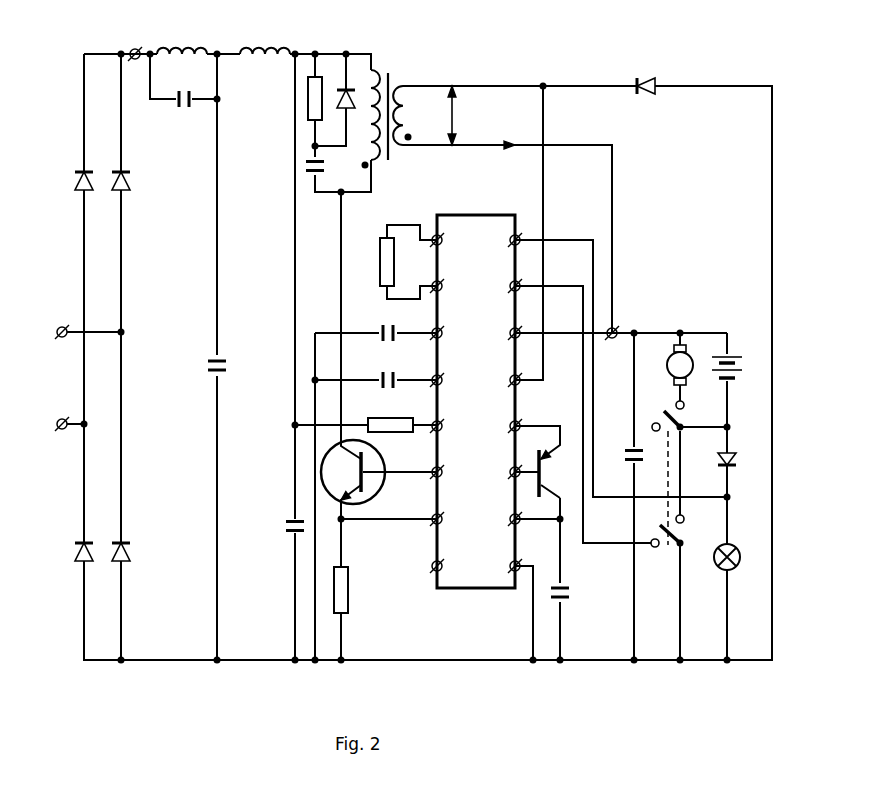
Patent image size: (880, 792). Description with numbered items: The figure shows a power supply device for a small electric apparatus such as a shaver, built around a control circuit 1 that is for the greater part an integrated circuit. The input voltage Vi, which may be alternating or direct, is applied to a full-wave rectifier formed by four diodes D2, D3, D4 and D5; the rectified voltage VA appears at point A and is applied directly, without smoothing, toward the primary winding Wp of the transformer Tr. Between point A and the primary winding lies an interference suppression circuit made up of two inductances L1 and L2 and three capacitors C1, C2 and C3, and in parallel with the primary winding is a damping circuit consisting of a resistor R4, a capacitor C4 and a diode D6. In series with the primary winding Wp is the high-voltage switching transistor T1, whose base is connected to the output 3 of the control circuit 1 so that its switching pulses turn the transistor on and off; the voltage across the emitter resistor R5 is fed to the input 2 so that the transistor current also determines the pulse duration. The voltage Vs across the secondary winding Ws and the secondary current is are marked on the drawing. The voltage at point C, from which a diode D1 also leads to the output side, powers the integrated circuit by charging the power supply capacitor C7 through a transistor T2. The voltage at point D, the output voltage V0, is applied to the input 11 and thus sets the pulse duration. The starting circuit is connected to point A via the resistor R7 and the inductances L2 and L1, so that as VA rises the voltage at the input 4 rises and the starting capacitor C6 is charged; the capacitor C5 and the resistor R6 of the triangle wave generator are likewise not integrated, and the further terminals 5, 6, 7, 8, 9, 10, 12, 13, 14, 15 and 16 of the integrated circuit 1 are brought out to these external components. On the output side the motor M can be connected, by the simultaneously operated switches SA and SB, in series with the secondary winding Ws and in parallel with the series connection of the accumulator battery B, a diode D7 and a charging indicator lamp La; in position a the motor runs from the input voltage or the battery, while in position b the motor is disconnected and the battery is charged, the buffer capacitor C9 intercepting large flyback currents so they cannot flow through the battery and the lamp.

The rectified voltage VA is at (135, 49).
The rectifier output point A is at (135, 71).
The inductance L1 is at (196, 46).
The inductance L2 is at (270, 46).
The capacitor C1 is at (187, 104).
The capacitor C2 is at (226, 368).
The capacitor C3 is at (285, 524).
The capacitor C4 is at (305, 166).
The triangle wave generator capacitor C5 is at (383, 326).
The starting capacitor C6 is at (383, 373).
The power supply capacitor C7 is at (571, 592).
The buffer capacitor C9 is at (626, 461).
The rectifier diode D1 is at (648, 78).
The rectifier diode D2 is at (74, 181).
The rectifier diode D3 is at (131, 181).
The rectifier diode D4 is at (74, 552).
The rectifier diode D5 is at (131, 552).
The damping diode D6 is at (348, 86).
The diode D7 is at (737, 458).
The damping resistor R4 is at (307, 100).
The emitter resistor R5 is at (349, 602).
The triangle wave generator resistor R6 is at (380, 272).
The resistor R7 is at (380, 418).
The high-voltage switching transistor T1 is at (377, 492).
The transistor T2 is at (546, 475).
The transformer Tr is at (390, 72).
The primary winding Wp is at (373, 130).
The secondary winding Ws is at (400, 128).
The secondary voltage Vs is at (462, 115).
The secondary current is is at (510, 150).
The input voltage Vi is at (52, 378).
The power supply tapping point C is at (543, 72).
The output voltage point D is at (611, 349).
The output voltage V0 is at (615, 328).
The motor M is at (667, 360).
The accumulator battery B is at (743, 362).
The switch SA is at (667, 410).
The switch SB is at (668, 548).
The charging indicator lamp La is at (740, 565).
The control circuit 1 is at (475, 634).
The integrated circuit input 2 is at (445, 519).
The integrated circuit output 3 is at (445, 472).
The integrated circuit input 4 is at (445, 426).
The IC pin 5 is at (445, 380).
The IC pin 6 is at (445, 333).
The IC pin 7 is at (445, 286).
The IC pin 8 is at (445, 240).
The IC pin 9 is at (506, 240).
The IC pin 10 is at (500, 286).
The integrated circuit input 11 is at (500, 333).
The IC pin 12 is at (500, 380).
The IC pin 13 is at (500, 426).
The IC pin 14 is at (500, 472).
The IC pin 15 is at (500, 519).
The IC pin 16 is at (500, 566).